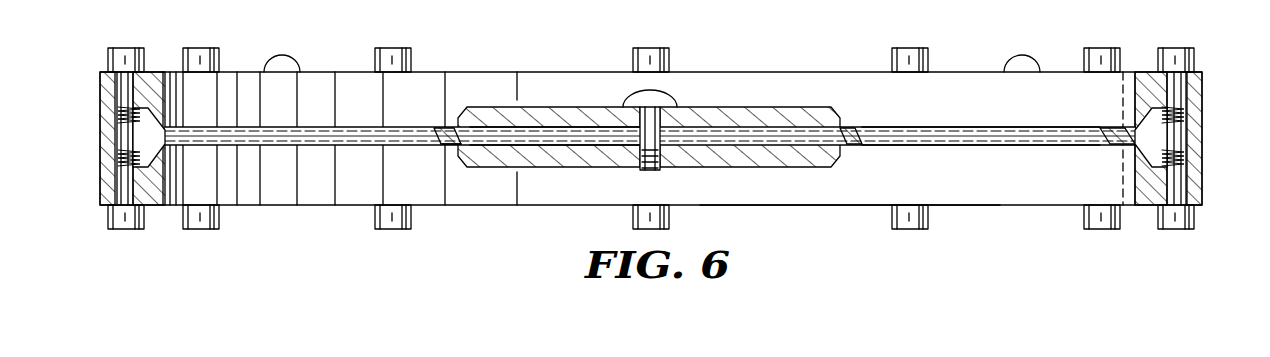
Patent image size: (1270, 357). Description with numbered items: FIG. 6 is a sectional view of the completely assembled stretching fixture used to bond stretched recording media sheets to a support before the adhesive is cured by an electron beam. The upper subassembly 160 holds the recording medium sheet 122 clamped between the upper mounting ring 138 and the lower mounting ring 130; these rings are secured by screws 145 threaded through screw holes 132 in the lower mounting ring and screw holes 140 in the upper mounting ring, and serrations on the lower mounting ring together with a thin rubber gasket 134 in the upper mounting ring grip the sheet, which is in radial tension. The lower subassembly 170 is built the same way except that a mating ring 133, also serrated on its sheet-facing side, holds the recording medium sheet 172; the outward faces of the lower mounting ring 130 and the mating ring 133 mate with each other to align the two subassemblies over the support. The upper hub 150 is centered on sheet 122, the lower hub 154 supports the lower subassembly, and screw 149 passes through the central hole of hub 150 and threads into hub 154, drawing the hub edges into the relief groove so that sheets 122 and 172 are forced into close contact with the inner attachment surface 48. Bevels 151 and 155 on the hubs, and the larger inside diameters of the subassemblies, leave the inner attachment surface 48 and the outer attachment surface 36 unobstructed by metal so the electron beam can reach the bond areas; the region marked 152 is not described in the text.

The circular outer attachment surface 36 is at (181, 72).
The circular inner attachment surface 48 is at (453, 130).
The recording medium sheet 122 is at (1013, 125).
The lower mounting ring 130 is at (100, 125).
The screw holes 132 is at (110, 158).
The mating ring 133 is at (100, 148).
The thin rubber gasket 134 is at (113, 110).
The upper mounting ring 138 is at (966, 78).
The screw holes 140 is at (118, 185).
The screws 145 is at (147, 230).
The screw 149 is at (662, 100).
The upper hub 150 is at (747, 107).
The bevel 151 is at (456, 128).
The rod section 152 is at (632, 127).
The lower hub 154 is at (558, 160).
The bevel 155 is at (450, 146).
The upper subassembly 160 is at (820, 66).
The lower subassembly 170 is at (857, 214).
The recording medium sheet 172 is at (1017, 143).